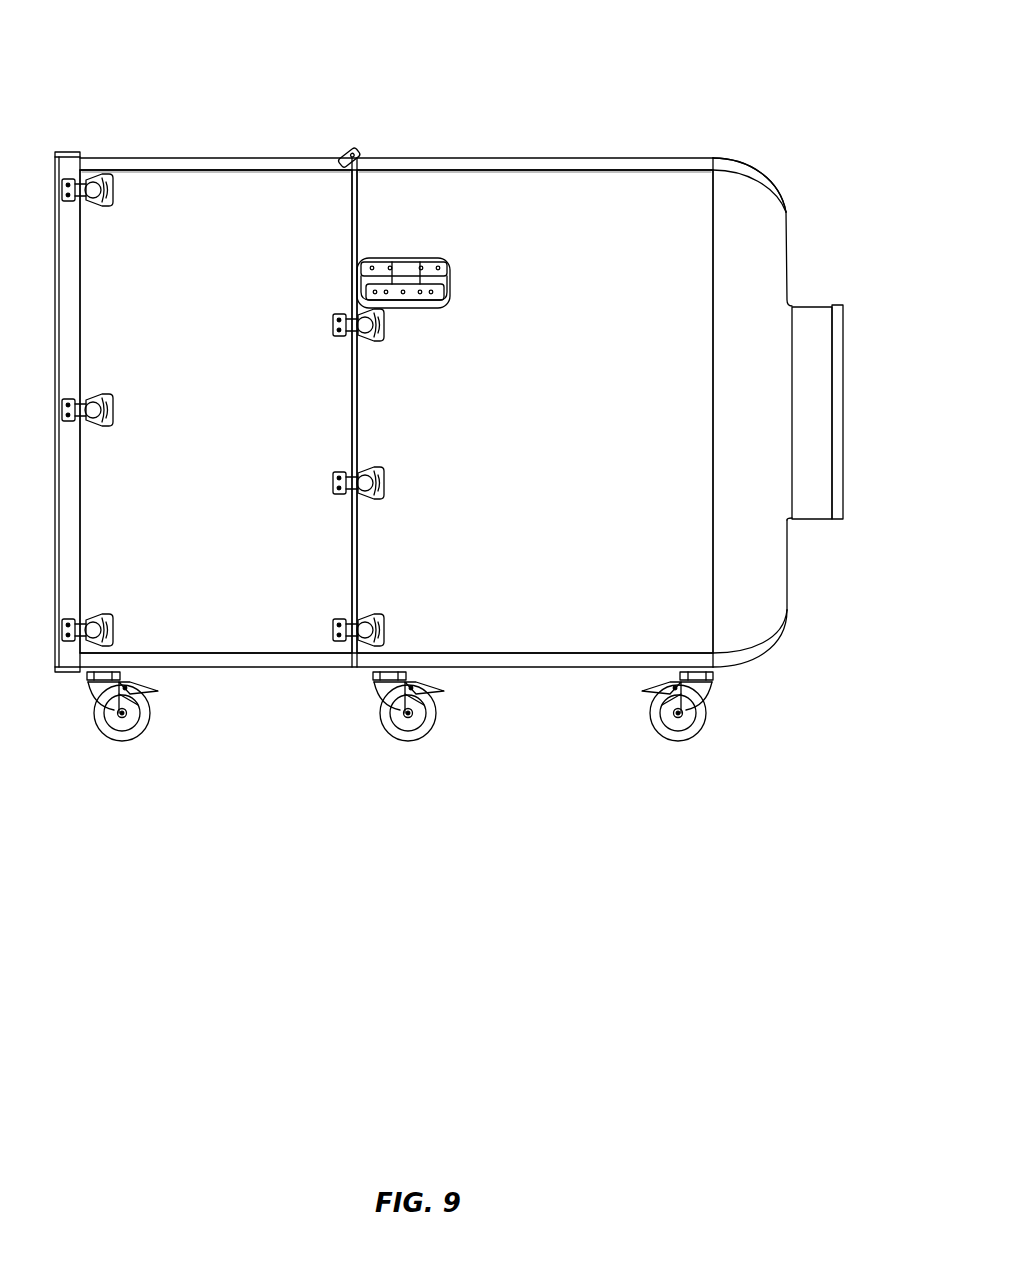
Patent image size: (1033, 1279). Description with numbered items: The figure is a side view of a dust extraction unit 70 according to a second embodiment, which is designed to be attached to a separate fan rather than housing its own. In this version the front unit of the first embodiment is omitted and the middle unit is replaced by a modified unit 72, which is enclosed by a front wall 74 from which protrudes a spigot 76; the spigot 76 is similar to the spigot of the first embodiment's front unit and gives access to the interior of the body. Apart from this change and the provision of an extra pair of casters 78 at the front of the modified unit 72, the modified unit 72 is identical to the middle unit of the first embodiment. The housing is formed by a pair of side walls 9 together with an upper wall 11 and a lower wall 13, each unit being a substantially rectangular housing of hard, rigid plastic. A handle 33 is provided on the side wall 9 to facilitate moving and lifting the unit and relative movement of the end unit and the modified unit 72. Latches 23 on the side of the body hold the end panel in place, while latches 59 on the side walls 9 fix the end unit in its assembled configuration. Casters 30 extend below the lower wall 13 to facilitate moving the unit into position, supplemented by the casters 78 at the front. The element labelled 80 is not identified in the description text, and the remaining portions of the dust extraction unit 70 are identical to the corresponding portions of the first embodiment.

The dust extraction unit 70 is at (727, 62).
The top rail 80 is at (246, 156).
The lower wall 13 is at (262, 668).
The upper wall 11 is at (160, 156).
The side wall 9 is at (200, 633).
The modified unit 72 is at (451, 156).
The front wall 74 is at (786, 213).
The spigot 76 is at (822, 306).
The handle 33 is at (450, 262).
The latch 23 is at (112, 188).
The latch 59 is at (384, 324).
The caster 30 is at (135, 740).
The caster 78 is at (698, 740).